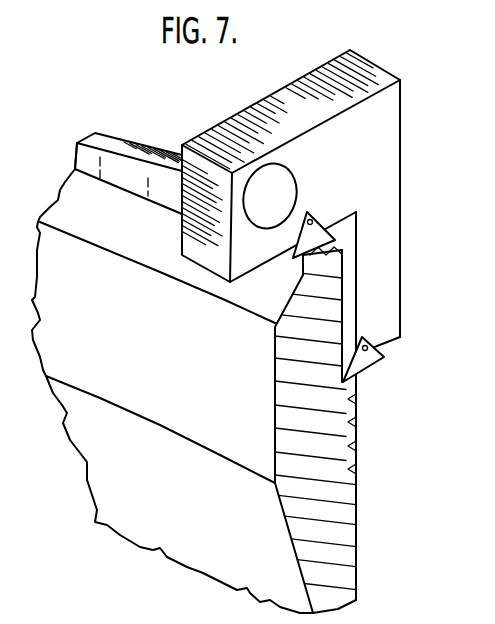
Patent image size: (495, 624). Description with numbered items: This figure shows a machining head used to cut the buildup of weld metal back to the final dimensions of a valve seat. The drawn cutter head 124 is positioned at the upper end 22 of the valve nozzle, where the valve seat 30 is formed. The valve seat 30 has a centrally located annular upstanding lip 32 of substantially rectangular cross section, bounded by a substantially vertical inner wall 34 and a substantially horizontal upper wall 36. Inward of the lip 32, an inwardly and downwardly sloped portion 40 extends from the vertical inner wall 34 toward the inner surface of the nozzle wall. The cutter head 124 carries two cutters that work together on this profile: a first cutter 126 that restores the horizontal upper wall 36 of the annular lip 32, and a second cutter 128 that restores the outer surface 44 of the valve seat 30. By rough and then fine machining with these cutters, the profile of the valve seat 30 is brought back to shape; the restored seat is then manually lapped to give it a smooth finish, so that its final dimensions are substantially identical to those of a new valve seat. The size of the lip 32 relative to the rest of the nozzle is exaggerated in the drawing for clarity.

The upper end 22 is at (9, 52).
The valve seat 30 is at (357, 429).
The annular upstanding lip 32 is at (91, 133).
The vertical inner wall 34 is at (80, 163).
The horizontal upper wall 36 is at (131, 153).
The inwardly and downwardly sloped portion 40 is at (67, 207).
The outer surface 44 is at (343, 302).
The cutter head 124 is at (392, 102).
The first cutter 126 is at (325, 233).
The second cutter 128 is at (384, 358).